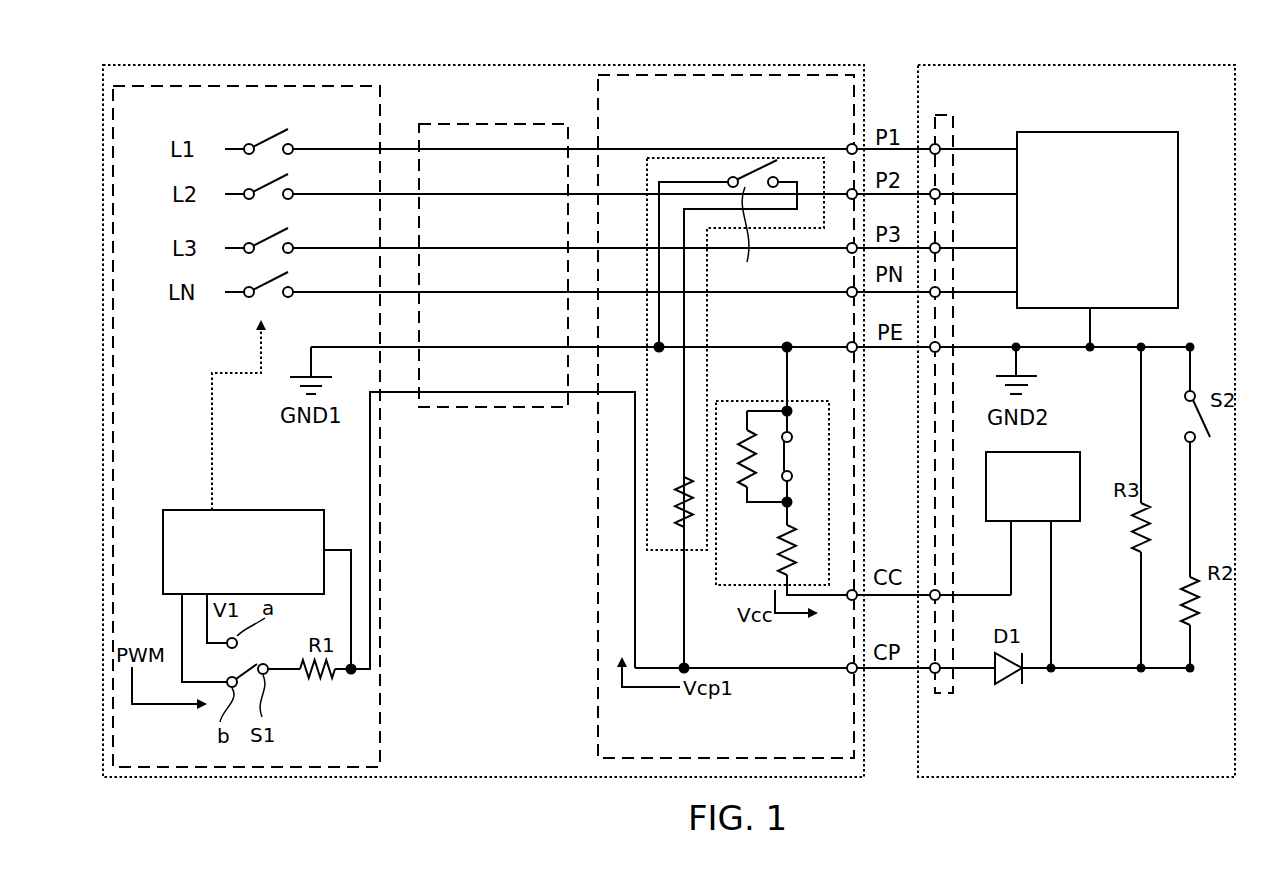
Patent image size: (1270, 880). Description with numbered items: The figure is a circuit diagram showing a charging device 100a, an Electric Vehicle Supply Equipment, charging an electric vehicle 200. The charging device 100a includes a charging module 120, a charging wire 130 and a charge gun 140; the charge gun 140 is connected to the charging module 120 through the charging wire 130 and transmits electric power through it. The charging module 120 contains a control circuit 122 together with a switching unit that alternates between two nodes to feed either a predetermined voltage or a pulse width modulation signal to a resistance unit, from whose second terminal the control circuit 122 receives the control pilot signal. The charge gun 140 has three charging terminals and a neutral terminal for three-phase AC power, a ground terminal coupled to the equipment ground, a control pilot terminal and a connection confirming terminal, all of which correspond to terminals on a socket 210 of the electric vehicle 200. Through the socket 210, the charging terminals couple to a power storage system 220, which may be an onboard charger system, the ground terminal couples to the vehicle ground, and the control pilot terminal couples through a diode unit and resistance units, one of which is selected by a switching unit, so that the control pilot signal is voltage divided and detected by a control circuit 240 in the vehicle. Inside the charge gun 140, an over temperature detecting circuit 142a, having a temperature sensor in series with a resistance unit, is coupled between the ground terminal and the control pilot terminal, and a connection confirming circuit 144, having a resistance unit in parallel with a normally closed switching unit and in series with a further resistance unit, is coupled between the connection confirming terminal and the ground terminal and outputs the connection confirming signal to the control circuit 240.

The charging device 100a is at (335, 65).
The charging module 120 is at (380, 743).
The control circuit 122 is at (262, 566).
The charging wire 130 is at (482, 407).
The charge gun 140 is at (597, 673).
The over temperature detecting circuit 142a is at (785, 158).
The connection confirming circuit 144 is at (777, 401).
The electric vehicle 200 is at (1180, 65).
The socket 210 is at (955, 125).
The power storage system 220 is at (1116, 231).
The control circuit 240 is at (1052, 497).